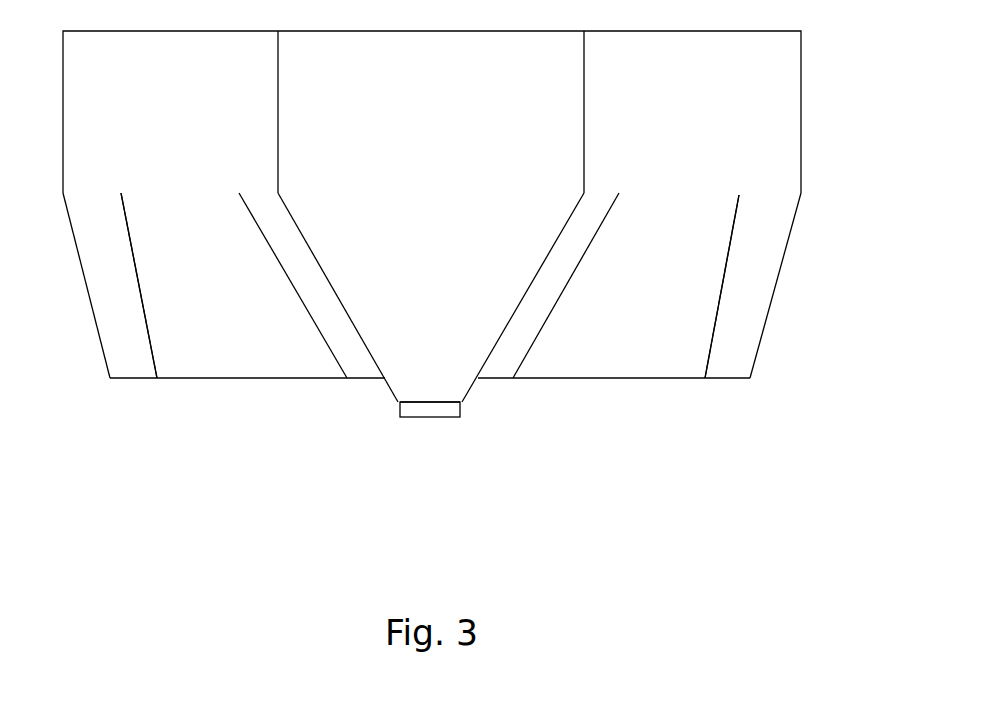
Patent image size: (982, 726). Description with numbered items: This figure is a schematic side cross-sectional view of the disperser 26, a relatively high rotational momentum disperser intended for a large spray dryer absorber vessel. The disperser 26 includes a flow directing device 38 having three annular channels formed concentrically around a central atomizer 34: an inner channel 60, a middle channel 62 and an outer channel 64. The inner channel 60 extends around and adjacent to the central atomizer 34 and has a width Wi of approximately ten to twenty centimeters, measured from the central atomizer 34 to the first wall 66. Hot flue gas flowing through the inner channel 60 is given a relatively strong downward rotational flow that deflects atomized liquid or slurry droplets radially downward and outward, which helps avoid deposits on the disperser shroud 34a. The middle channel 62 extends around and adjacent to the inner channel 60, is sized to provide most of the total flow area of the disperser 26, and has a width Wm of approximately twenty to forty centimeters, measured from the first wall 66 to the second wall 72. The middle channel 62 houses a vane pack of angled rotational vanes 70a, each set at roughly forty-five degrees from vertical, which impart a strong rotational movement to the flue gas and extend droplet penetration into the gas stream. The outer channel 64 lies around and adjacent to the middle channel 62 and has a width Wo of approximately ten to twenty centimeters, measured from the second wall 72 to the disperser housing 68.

The flow directing device 38 is at (802, 78).
The middle channel 62 is at (110, 347).
The outer channel 64 is at (118, 362).
The disperser housing 68 is at (780, 277).
The second wall 72 is at (152, 340).
The rotational vanes 70a is at (280, 320).
The inner channel 60 is at (285, 240).
The first wall 66 is at (262, 238).
The central atomizer 34 is at (430, 417).
The disperser shroud 34a is at (470, 393).
The disperser 26 is at (762, 375).
The width of outer channel Wo is at (157, 394).
The width of middle channel Wm is at (347, 394).
The width of inner channel Wi is at (397, 394).